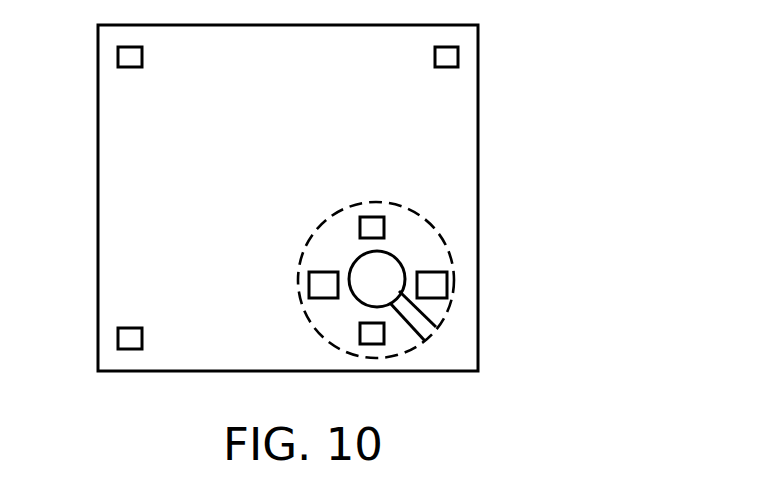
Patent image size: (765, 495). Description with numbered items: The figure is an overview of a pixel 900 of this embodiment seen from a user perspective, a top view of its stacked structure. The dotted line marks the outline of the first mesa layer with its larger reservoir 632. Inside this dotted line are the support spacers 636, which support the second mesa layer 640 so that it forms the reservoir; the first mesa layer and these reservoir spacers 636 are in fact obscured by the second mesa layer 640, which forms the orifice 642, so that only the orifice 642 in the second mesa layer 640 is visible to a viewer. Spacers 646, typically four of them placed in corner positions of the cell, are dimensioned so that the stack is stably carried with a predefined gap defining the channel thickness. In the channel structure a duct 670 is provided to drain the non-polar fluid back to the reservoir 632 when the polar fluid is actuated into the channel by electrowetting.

The pixel 900 is at (637, 386).
The second mesa layer 640 is at (457, 133).
The spacers 646 is at (458, 56).
The reservoir 632 is at (423, 215).
The orifice 642 is at (383, 275).
The support spacers 636 is at (427, 285).
The duct 670 is at (412, 327).